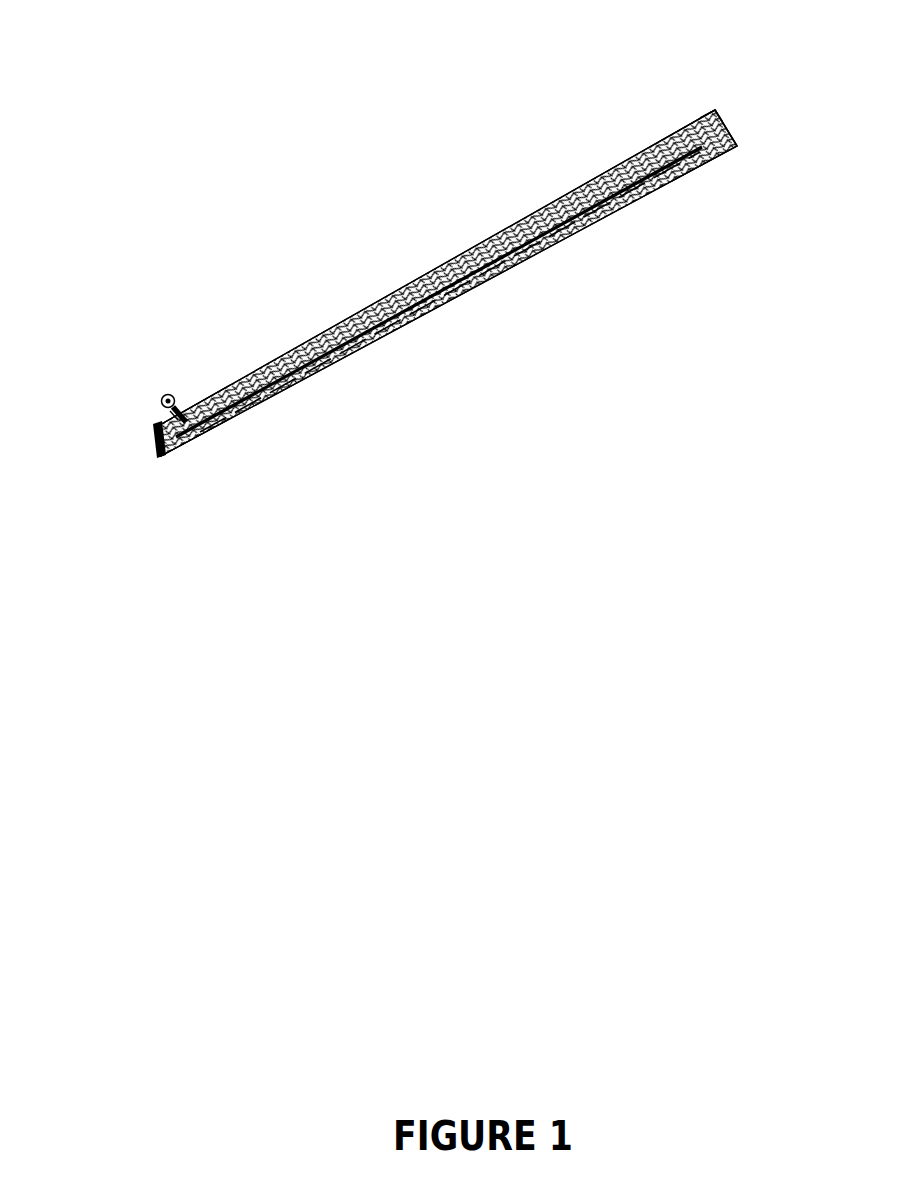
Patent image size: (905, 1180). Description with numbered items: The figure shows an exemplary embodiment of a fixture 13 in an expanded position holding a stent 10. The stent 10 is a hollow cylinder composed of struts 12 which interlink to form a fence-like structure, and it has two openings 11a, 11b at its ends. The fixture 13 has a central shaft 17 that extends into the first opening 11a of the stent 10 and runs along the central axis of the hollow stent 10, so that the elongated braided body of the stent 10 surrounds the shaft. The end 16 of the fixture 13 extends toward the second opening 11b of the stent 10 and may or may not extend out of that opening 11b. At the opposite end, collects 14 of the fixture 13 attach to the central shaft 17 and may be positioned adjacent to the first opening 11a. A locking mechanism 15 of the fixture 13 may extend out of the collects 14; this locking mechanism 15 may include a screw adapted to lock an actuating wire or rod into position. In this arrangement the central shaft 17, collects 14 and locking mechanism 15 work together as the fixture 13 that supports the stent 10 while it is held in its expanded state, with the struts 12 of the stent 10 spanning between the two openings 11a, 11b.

The stent 10 is at (438, 291).
The opening 11a is at (205, 443).
The opening 11b is at (732, 130).
The struts 12 is at (713, 112).
The fixture 13 is at (110, 336).
The collects 14 is at (157, 458).
The locking mechanism 15 is at (162, 397).
The end 16 is at (690, 150).
The central shaft 17 is at (423, 283).